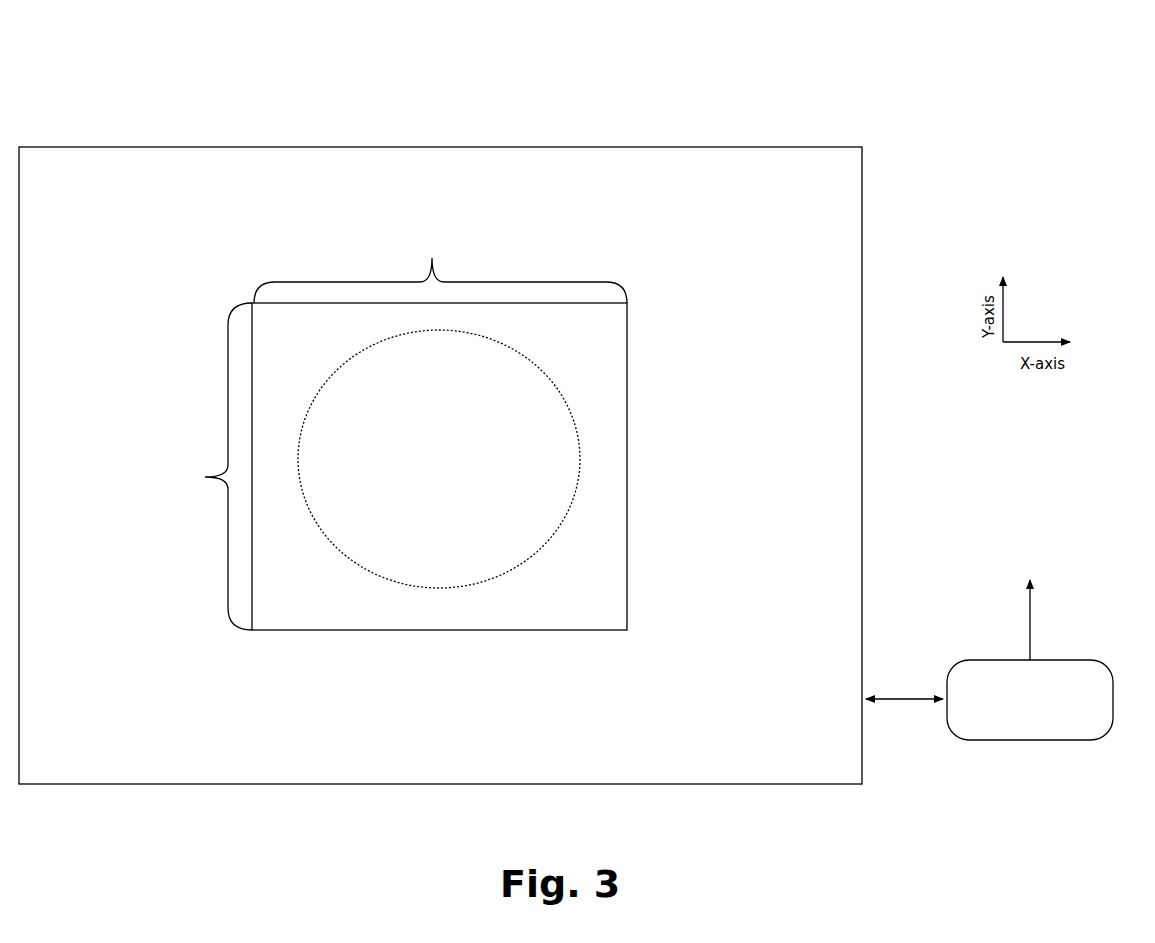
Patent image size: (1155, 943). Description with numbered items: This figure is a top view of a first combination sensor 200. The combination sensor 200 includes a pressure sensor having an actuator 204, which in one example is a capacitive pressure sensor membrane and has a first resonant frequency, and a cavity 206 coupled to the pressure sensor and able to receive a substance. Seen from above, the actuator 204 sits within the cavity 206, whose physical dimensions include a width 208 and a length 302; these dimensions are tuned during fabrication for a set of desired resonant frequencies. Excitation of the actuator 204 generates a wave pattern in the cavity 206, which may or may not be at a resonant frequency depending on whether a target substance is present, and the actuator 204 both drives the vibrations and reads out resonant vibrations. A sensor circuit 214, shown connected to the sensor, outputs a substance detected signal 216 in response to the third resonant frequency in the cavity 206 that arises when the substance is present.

The first combination sensor 200 is at (166, 89).
The actuator 204 is at (442, 463).
The cavity 206 is at (505, 613).
The width 208 is at (496, 242).
The length 302 is at (175, 430).
The sensor circuit 214 is at (1088, 660).
The substance detected signal 216 is at (1040, 552).